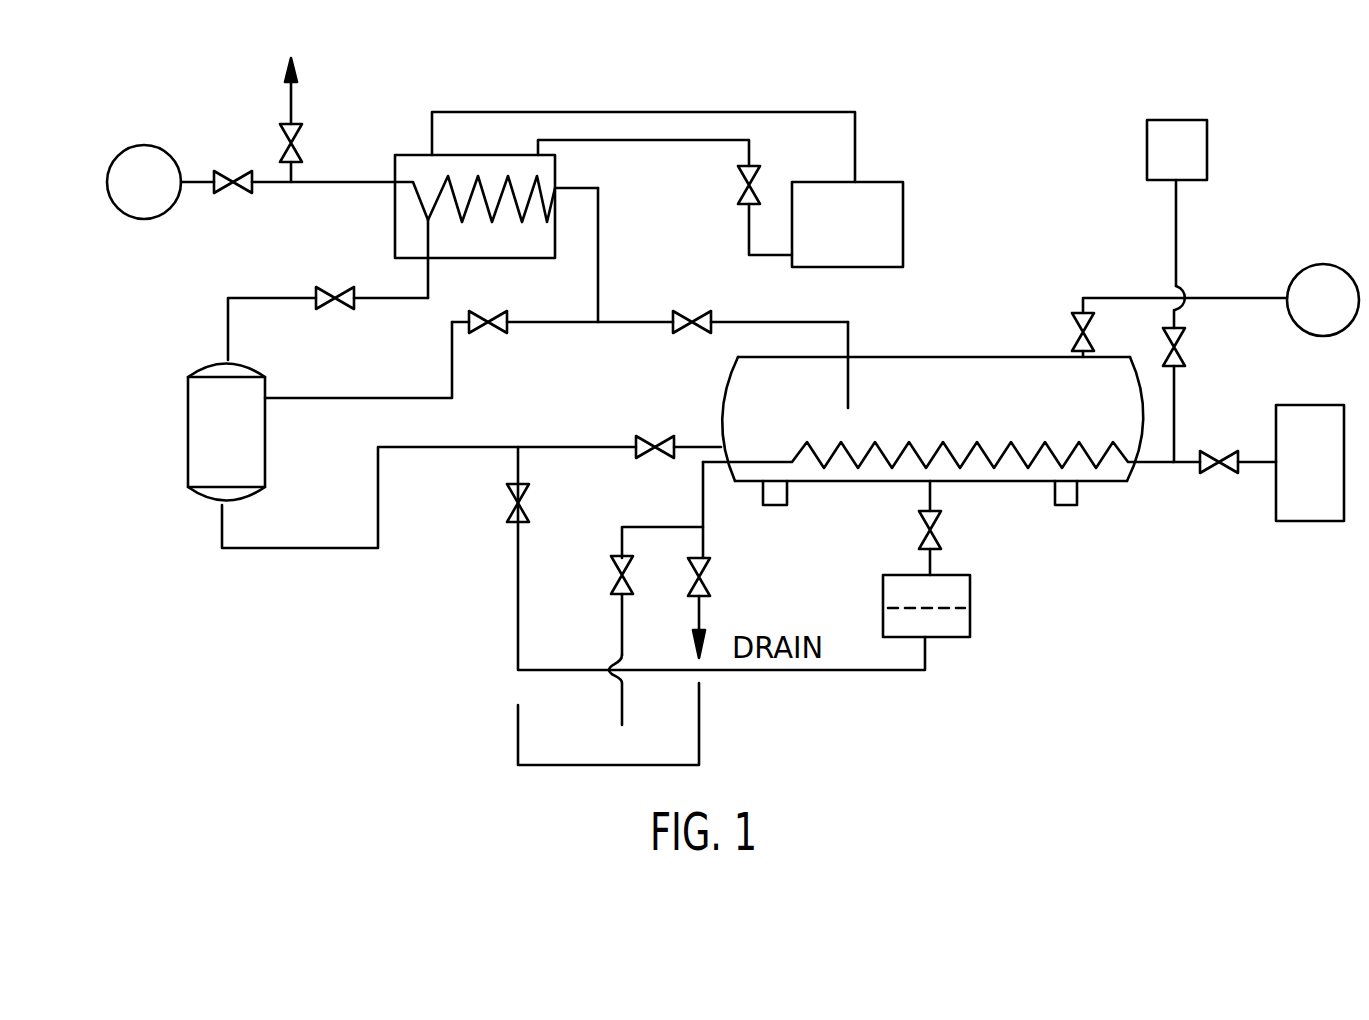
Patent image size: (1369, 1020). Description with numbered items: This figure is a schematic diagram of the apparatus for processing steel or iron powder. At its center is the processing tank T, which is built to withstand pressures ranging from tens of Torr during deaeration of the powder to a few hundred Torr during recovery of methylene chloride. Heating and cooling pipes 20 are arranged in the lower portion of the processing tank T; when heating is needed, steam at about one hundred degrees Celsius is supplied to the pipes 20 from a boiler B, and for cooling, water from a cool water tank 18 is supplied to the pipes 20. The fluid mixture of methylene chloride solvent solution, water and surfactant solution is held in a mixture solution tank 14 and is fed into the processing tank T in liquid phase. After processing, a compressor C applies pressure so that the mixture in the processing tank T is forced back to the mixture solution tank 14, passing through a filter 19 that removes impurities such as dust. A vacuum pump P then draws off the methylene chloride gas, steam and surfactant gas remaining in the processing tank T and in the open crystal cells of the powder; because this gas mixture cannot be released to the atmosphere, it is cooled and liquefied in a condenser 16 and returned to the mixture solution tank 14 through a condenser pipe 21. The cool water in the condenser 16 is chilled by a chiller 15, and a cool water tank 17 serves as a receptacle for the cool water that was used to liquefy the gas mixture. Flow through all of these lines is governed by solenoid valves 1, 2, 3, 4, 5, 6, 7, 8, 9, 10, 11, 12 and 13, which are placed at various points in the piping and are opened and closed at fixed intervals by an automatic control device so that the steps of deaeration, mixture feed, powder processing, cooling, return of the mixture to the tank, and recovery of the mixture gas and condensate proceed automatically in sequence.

The solenoid valve 1 is at (232, 171).
The solenoid valve 2 is at (302, 143).
The solenoid valve 3 is at (690, 311).
The solenoid valve 4 is at (655, 436).
The solenoid valve 5 is at (941, 529).
The solenoid valve 6 is at (1072, 332).
The solenoid valve 7 is at (1219, 473).
The solenoid valve 8 is at (1185, 350).
The solenoid valve 9 is at (710, 577).
The solenoid valve 10 is at (611, 575).
The solenoid valve 11 is at (337, 287).
The solenoid valve 12 is at (529, 503).
The solenoid valve 13 is at (487, 333).
The mixture solution tank 14 is at (190, 421).
The chiller 15 is at (847, 224).
The condenser 16 is at (403, 153).
The cool water tank 17 is at (518, 727).
The cool water tank 18 is at (1177, 150).
The filter 19 is at (970, 600).
The heating and cooling pipes 20 is at (980, 448).
The condenser pipe 21 is at (497, 214).
The processing tank T is at (948, 357).
The vacuum pump P is at (144, 182).
The boiler B is at (1310, 463).
The compressor C is at (1323, 300).